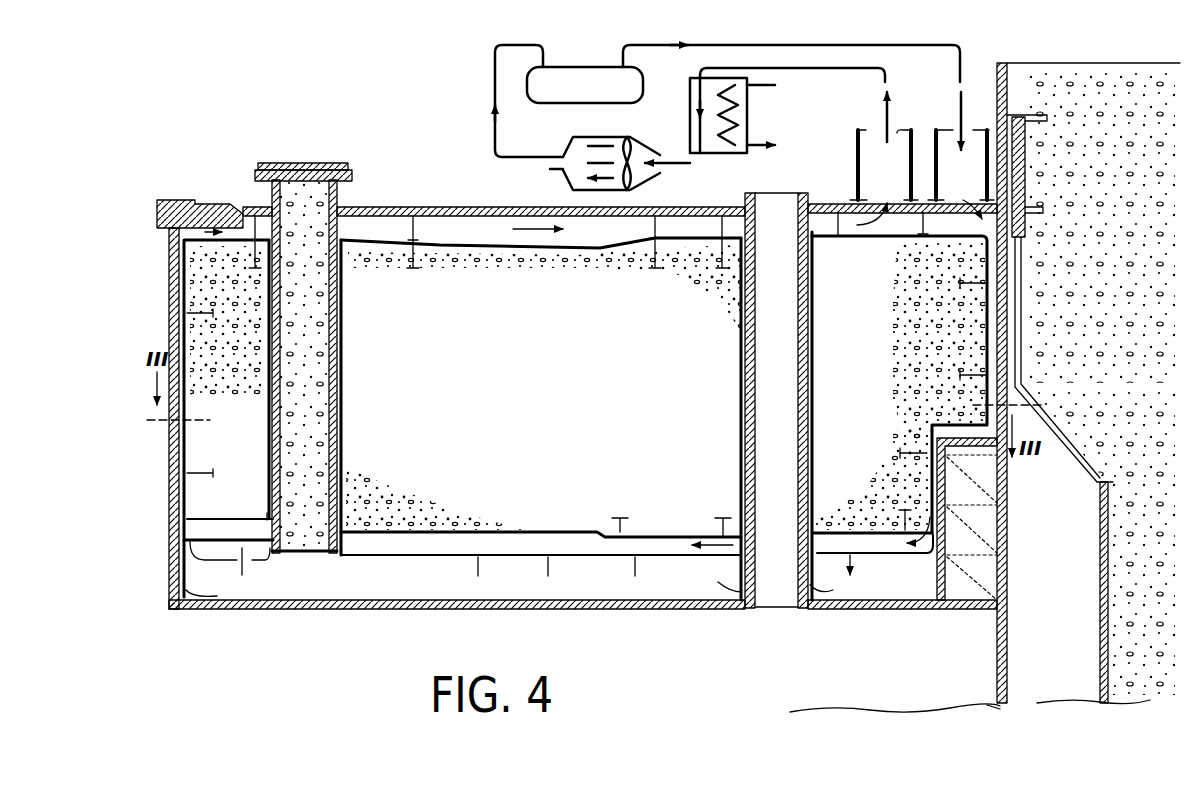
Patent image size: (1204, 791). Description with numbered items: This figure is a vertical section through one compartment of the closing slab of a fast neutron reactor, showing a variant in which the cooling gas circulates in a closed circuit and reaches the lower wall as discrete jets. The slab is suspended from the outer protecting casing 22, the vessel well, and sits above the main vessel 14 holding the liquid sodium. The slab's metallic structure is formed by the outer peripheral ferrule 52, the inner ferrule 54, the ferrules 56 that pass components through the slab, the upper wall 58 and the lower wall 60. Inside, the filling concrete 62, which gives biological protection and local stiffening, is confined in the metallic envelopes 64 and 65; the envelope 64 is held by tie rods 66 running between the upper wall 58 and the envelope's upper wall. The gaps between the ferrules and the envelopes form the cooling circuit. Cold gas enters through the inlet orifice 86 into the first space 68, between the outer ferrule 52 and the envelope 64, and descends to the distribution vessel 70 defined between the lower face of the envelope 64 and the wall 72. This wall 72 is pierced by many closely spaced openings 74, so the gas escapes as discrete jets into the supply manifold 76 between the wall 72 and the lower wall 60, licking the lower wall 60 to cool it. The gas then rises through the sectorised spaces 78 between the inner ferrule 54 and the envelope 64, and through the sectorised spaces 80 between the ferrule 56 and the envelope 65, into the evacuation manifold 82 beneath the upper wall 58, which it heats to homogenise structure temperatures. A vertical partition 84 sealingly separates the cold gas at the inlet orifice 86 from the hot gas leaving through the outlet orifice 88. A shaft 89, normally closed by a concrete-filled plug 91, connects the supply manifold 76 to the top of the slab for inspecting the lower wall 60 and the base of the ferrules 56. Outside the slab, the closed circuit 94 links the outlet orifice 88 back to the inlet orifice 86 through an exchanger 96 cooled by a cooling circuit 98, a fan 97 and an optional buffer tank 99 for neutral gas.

The main vessel 14 is at (970, 387).
The outer protecting casing 22 is at (1093, 379).
The outer peripheral ferrule 52 is at (1063, 190).
The inner ferrule 54 is at (192, 422).
The ferrule for passage of components 56 is at (897, 373).
The upper wall 58 is at (620, 183).
The lower wall 60 is at (583, 621).
The filling concrete 62 is at (497, 395).
The metallic envelope 64 is at (586, 384).
The metallic envelope 65 is at (741, 400).
The tie rods 66 is at (488, 217).
The first space 68 is at (1062, 470).
The distribution vessel 70 is at (636, 499).
The perforated wall 72 is at (290, 579).
The openings 74 is at (587, 579).
The supply manifold 76 is at (509, 607).
The sectorised spaces 78 is at (203, 418).
The sectorised spaces 80 is at (735, 400).
The evacuation manifold 82 is at (384, 201).
The vertical partition 84 is at (907, 244).
The inlet orifice 86 is at (935, 146).
The outlet orifice 88 is at (853, 137).
The shaft 89 is at (334, 397).
The plug 91 is at (326, 358).
The closed circuit 94 is at (791, 98).
The exchanger 96 is at (746, 115).
The fan 97 is at (620, 144).
The cooling circuit 98 is at (774, 132).
The buffer tank 99 is at (569, 101).